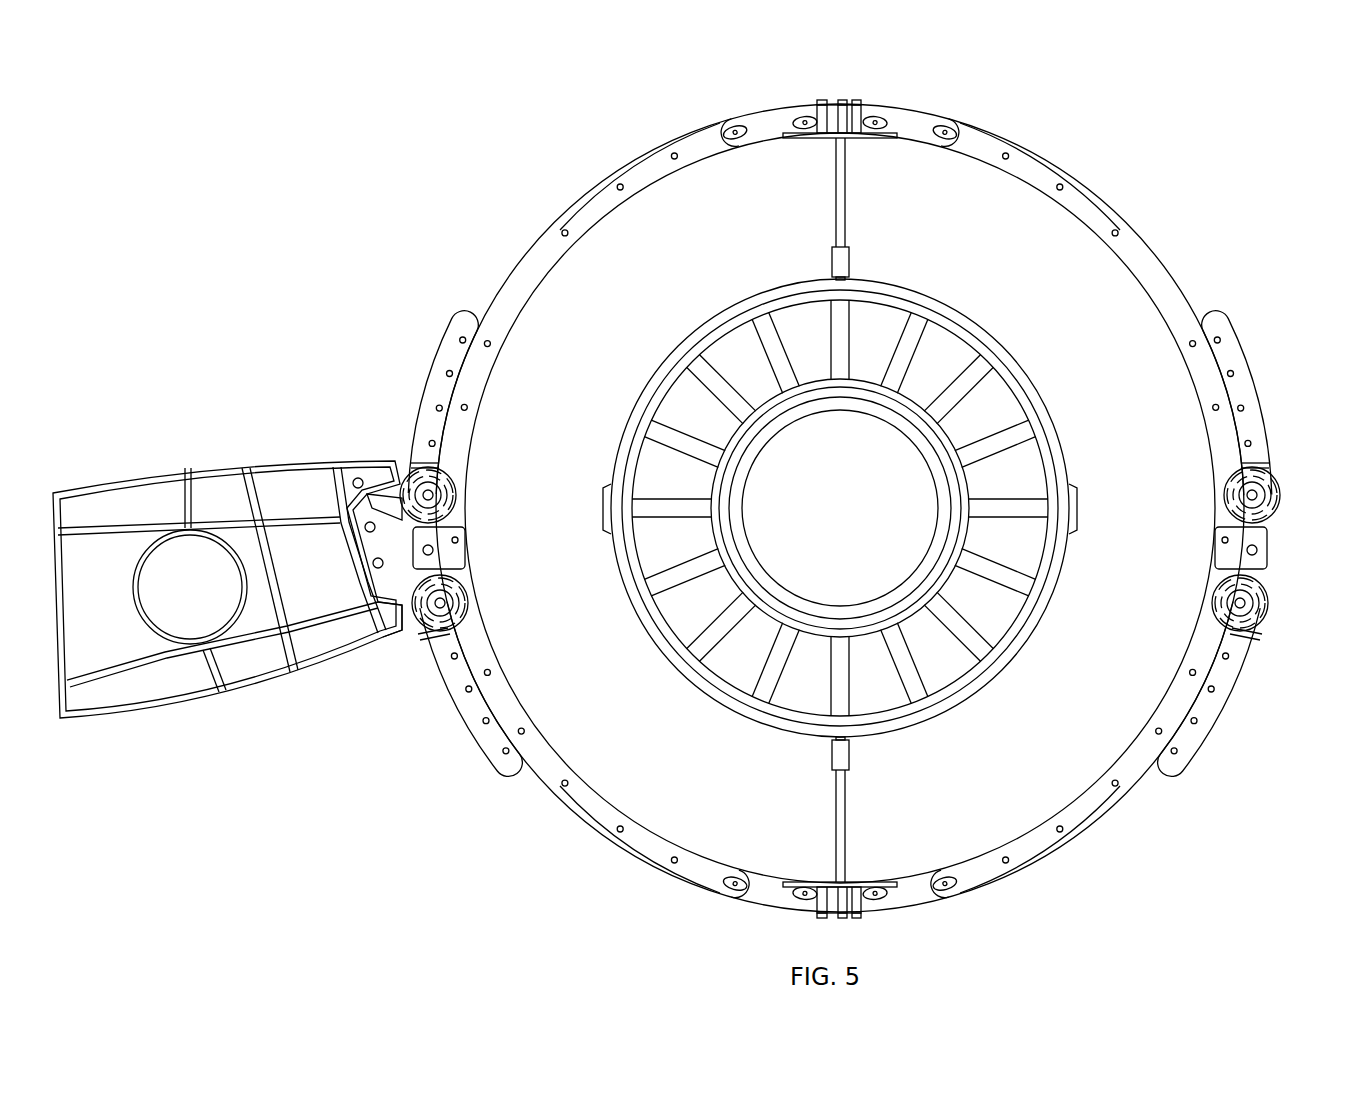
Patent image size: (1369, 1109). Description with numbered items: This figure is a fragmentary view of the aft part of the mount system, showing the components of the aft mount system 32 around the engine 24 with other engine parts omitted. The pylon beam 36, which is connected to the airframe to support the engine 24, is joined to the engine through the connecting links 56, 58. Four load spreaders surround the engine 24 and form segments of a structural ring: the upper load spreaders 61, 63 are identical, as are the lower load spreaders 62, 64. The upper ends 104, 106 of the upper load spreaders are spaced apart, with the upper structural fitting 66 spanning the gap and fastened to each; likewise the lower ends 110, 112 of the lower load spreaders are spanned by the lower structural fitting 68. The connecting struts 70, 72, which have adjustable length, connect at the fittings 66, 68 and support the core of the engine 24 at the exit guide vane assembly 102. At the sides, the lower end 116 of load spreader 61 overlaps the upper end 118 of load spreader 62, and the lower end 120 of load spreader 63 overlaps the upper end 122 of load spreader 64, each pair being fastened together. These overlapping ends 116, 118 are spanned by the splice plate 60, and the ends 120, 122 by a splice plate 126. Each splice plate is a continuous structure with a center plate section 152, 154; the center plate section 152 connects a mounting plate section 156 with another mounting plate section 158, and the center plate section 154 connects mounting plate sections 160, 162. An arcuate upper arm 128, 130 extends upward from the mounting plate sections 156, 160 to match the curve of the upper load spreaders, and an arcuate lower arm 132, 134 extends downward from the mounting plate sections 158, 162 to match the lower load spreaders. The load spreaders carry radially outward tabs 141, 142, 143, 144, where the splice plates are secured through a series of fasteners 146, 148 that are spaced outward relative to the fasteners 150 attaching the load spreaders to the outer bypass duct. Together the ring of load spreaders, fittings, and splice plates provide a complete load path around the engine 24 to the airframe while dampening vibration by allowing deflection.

The engine 24 is at (1158, 244).
The aft mount system 32 is at (1090, 144).
The pylon beam 36 is at (126, 716).
The connecting link 56 is at (372, 482).
The connecting link 58 is at (380, 600).
The splice plate 60 is at (486, 745).
The upper load spreader 61 is at (638, 164).
The lower load spreader 62 is at (606, 823).
The upper load spreader 63 is at (1092, 200).
The lower load spreader 64 is at (1095, 818).
The upper structural fitting 66 is at (912, 124).
The lower structural fitting 68 is at (920, 882).
The connecting strut 70 is at (846, 206).
The connecting strut 72 is at (846, 820).
The exit guide vane assembly 102 is at (1040, 378).
The upper end of load spreader 61 104 is at (738, 128).
The upper end of load spreader 63 106 is at (950, 128).
The lower end of load spreader 62 110 is at (738, 888).
The lower end of load spreader 64 112 is at (950, 888).
The lower end of load spreader 61 116 is at (466, 520).
The upper end of load spreader 62 118 is at (462, 552).
The lower end of load spreader 63 120 is at (1220, 518).
The upper end of load spreader 64 122 is at (1218, 560).
The splice plate 126 is at (1238, 678).
The upper arm 128 is at (450, 352).
The upper arm 130 is at (1230, 348).
The lower arm 132 is at (485, 707).
The lower arm 134 is at (1192, 748).
The tab 141 is at (463, 322).
The tab 142 is at (507, 762).
The tab 143 is at (1214, 322).
The tab 144 is at (1172, 763).
The fasteners 146 is at (436, 408).
The fasteners 148 is at (1243, 408).
The fasteners 150 is at (562, 229).
The center plate section 152 is at (352, 530).
The center plate section 154 is at (1272, 546).
The mounting plate section 156 is at (458, 480).
The mounting plate section 158 is at (470, 602).
The mounting plate section 160 is at (1282, 492).
The mounting plate section 162 is at (1280, 602).